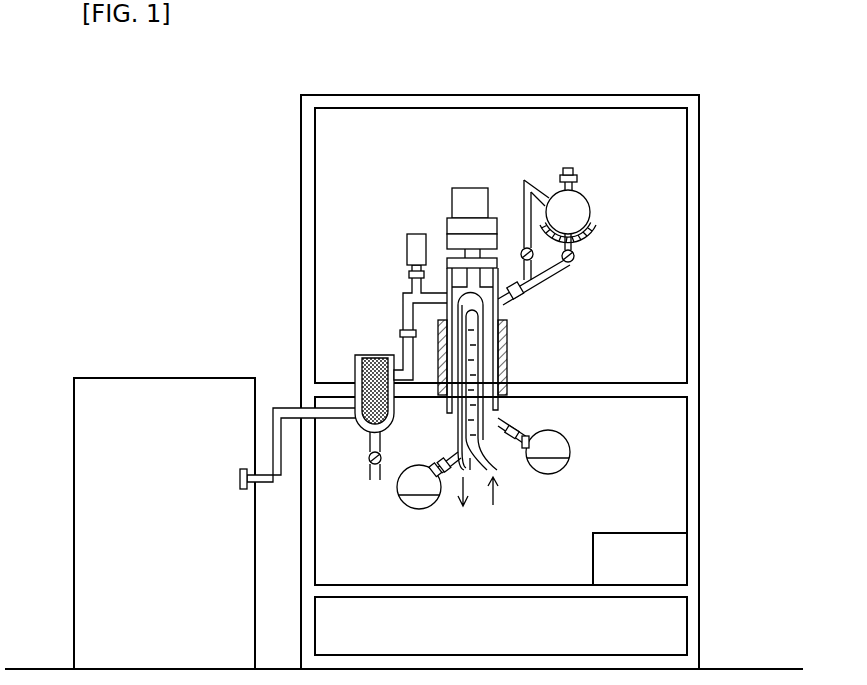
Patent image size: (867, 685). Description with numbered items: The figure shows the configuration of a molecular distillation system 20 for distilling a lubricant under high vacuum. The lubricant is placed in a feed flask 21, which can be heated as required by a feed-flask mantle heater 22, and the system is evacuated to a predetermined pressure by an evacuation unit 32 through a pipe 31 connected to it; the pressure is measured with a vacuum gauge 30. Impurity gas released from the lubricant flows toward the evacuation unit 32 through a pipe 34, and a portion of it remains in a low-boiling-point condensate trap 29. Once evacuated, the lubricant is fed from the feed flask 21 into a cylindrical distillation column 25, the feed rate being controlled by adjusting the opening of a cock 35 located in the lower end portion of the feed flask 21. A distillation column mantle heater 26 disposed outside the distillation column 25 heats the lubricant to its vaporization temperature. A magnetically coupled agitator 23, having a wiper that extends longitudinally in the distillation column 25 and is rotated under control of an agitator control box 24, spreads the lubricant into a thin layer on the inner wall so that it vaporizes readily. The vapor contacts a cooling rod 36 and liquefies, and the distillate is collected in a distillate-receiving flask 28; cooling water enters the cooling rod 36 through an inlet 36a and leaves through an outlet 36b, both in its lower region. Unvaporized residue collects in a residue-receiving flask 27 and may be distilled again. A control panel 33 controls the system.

The molecular distillation system 20 is at (207, 154).
The feed flask 21 is at (587, 199).
The feed-flask mantle heater 22 is at (598, 226).
The magnetically coupled agitator 23 is at (445, 222).
The agitator control box 24 is at (468, 188).
The distillation column 25 is at (501, 305).
The distillation column mantle heater 26 is at (508, 357).
The residue-receiving flask 27 is at (572, 447).
The distillate-receiving flask 28 is at (405, 500).
The low-boiling-point condensate trap 29 is at (372, 354).
The vacuum gauge 30 is at (407, 250).
The pipe 31 is at (275, 492).
The evacuation unit 32 is at (165, 377).
The control panel 33 is at (683, 553).
The pipe 34 is at (528, 182).
The cock 35 is at (574, 262).
The cooling rod 36 is at (456, 434).
The inlet 36a is at (496, 472).
The outlet 36b is at (477, 472).